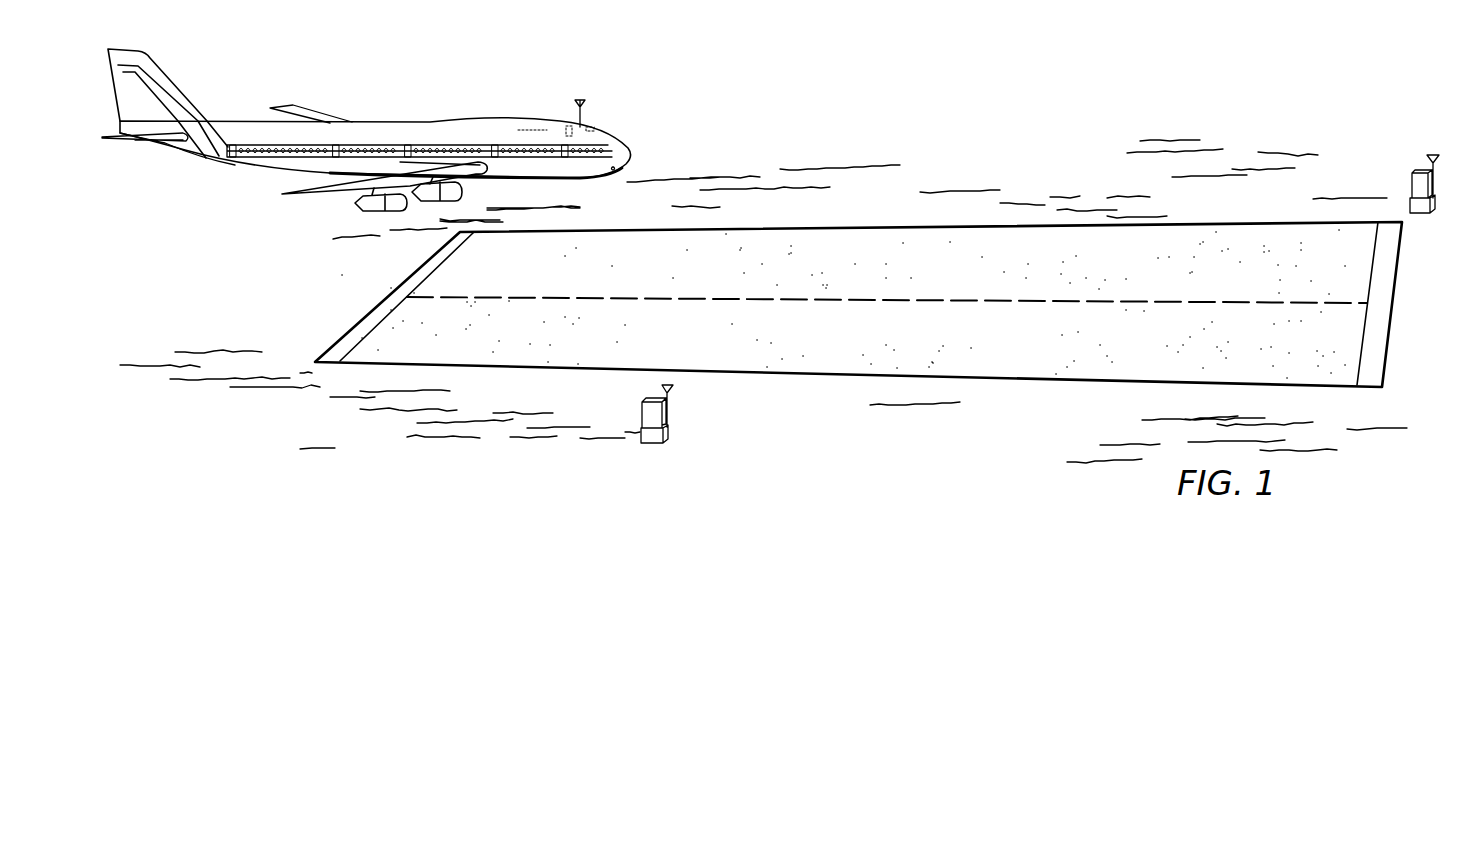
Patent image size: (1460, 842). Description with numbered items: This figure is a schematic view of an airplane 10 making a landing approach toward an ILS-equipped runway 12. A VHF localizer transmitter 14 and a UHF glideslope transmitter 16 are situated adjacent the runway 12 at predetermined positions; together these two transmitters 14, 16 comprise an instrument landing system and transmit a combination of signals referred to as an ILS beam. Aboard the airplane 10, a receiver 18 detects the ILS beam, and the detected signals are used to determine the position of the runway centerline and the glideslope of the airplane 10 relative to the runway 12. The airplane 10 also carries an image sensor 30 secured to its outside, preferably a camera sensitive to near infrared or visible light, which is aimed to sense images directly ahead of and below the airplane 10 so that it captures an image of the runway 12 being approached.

The airplane 10 is at (401, 122).
The runway 12 is at (813, 374).
The VHF localizer transmitter 14 is at (1417, 170).
The UHF glideslope transmitter 16 is at (670, 428).
The receiver 18 is at (613, 92).
The image sensor 30 is at (627, 173).